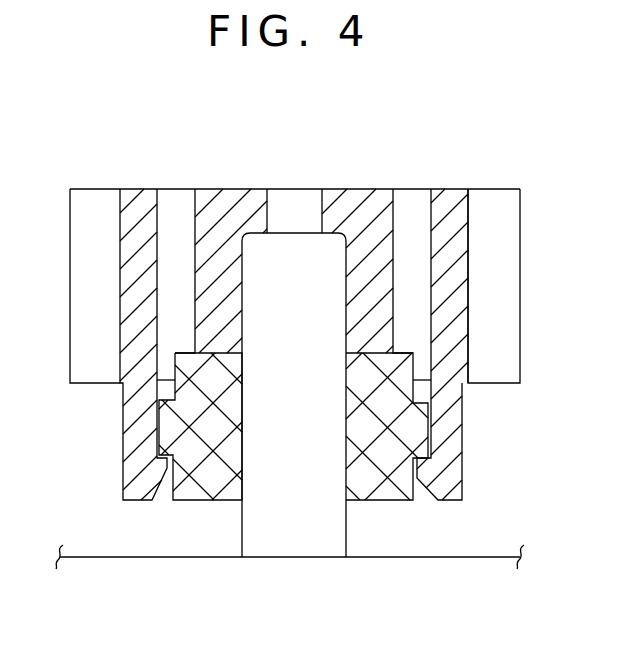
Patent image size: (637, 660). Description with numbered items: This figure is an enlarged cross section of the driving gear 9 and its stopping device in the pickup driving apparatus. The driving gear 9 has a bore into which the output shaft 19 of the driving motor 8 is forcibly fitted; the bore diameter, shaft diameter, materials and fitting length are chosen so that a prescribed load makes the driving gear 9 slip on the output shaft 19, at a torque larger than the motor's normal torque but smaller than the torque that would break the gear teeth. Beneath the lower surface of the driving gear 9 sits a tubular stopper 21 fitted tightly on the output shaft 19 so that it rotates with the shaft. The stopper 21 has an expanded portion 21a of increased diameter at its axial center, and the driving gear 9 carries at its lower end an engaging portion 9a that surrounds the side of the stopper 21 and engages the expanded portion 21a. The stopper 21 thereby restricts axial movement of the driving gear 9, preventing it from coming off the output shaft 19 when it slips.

The driving motor 8 is at (435, 571).
The driving gear 9 is at (232, 222).
The engaging portion 9a is at (137, 442).
The output shaft 19 is at (297, 502).
The stopper 21 is at (203, 480).
The expanded portion 21a is at (417, 428).